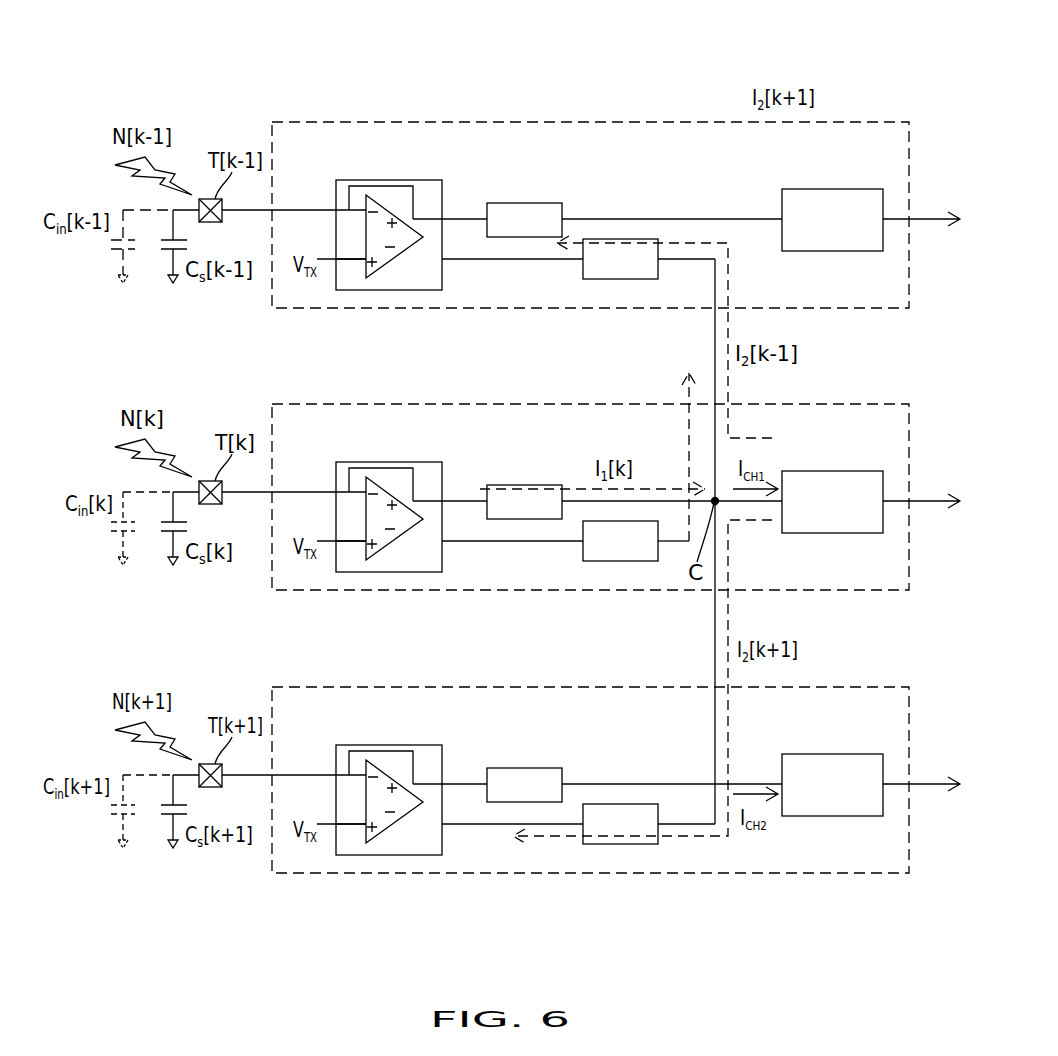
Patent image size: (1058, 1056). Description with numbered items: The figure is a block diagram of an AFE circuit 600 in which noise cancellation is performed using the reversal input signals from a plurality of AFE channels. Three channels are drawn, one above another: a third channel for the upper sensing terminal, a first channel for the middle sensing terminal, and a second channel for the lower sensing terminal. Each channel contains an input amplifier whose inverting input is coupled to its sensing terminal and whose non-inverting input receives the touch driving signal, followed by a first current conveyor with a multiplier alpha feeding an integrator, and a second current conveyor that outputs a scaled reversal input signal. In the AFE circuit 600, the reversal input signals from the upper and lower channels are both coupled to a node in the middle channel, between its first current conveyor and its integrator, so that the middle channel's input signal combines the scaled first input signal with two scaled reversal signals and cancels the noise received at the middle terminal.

The AFE circuit 600 is at (122, 942).